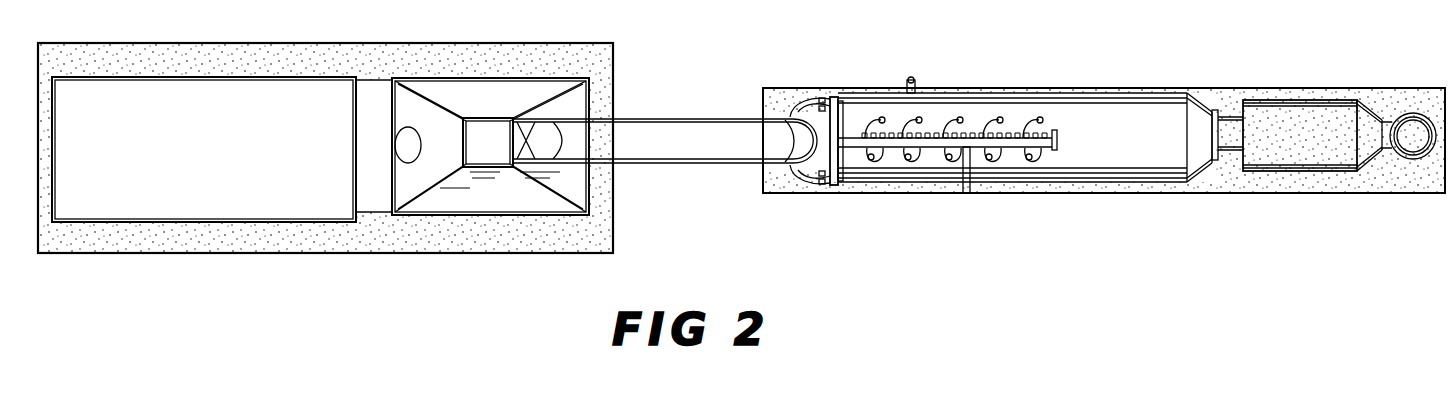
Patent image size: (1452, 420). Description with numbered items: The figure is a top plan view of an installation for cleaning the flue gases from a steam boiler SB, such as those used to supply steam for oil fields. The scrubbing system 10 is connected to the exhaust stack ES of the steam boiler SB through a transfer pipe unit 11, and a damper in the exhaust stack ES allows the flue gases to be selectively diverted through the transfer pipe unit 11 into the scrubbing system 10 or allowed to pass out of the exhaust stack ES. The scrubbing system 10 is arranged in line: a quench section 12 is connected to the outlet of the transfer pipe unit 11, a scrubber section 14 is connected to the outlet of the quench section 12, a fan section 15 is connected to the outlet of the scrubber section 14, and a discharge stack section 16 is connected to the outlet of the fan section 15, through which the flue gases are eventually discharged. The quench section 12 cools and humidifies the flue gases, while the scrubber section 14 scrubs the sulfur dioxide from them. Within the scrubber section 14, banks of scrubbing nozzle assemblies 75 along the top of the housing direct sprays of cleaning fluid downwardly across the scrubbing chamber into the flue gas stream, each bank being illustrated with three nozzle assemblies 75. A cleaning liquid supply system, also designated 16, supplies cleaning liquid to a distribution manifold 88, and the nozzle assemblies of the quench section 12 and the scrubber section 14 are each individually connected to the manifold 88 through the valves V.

The steam boiler SB is at (360, 65).
The exhaust stack ES is at (476, 122).
The transfer pipe unit 11 is at (697, 118).
The scrubbing system 10 is at (946, 72).
The quench section 12 is at (797, 185).
The valves V is at (830, 100).
The scrubber section 14 is at (1131, 97).
The scrubbing nozzle assemblies 75 is at (871, 121).
The distribution manifold 88 is at (1057, 136).
The fan section 15 is at (1287, 100).
The discharge stack section 16 is at (1421, 106).